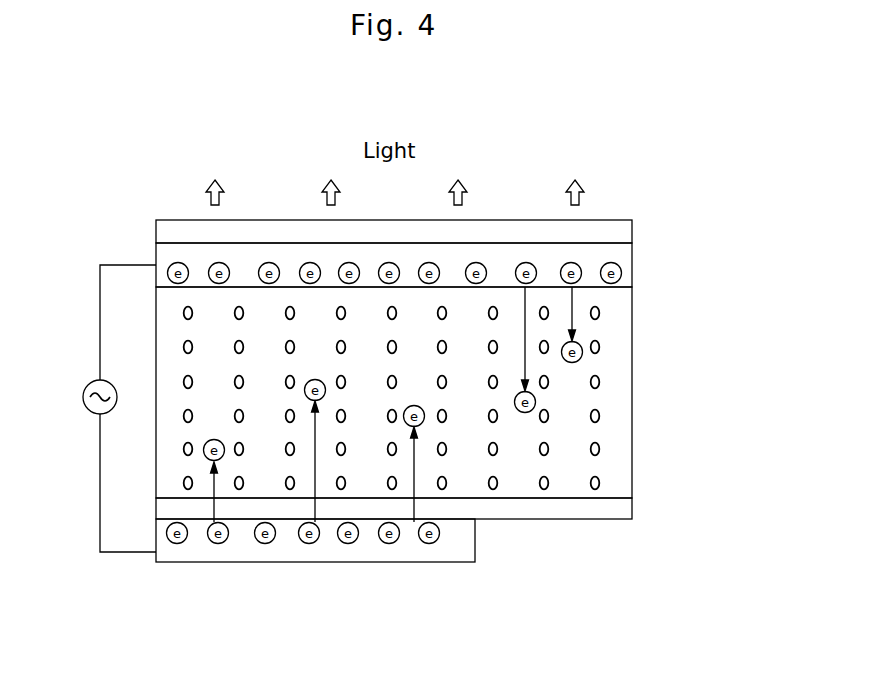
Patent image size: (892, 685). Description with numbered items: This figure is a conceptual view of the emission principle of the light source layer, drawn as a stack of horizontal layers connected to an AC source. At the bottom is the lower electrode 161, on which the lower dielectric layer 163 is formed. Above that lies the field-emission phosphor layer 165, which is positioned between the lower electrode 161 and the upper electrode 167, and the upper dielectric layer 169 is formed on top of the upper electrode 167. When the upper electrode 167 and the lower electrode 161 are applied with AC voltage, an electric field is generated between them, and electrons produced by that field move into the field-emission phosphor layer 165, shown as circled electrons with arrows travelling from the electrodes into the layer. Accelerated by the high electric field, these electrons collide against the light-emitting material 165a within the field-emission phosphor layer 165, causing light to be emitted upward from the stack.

The upper dielectric layer 169 is at (625, 229).
The upper electrode 167 is at (625, 264).
The field-emission phosphor layer 165 is at (625, 392).
The light-emitting material 165a is at (600, 448).
The lower dielectric layer 163 is at (625, 507).
The lower electrode 161 is at (475, 552).